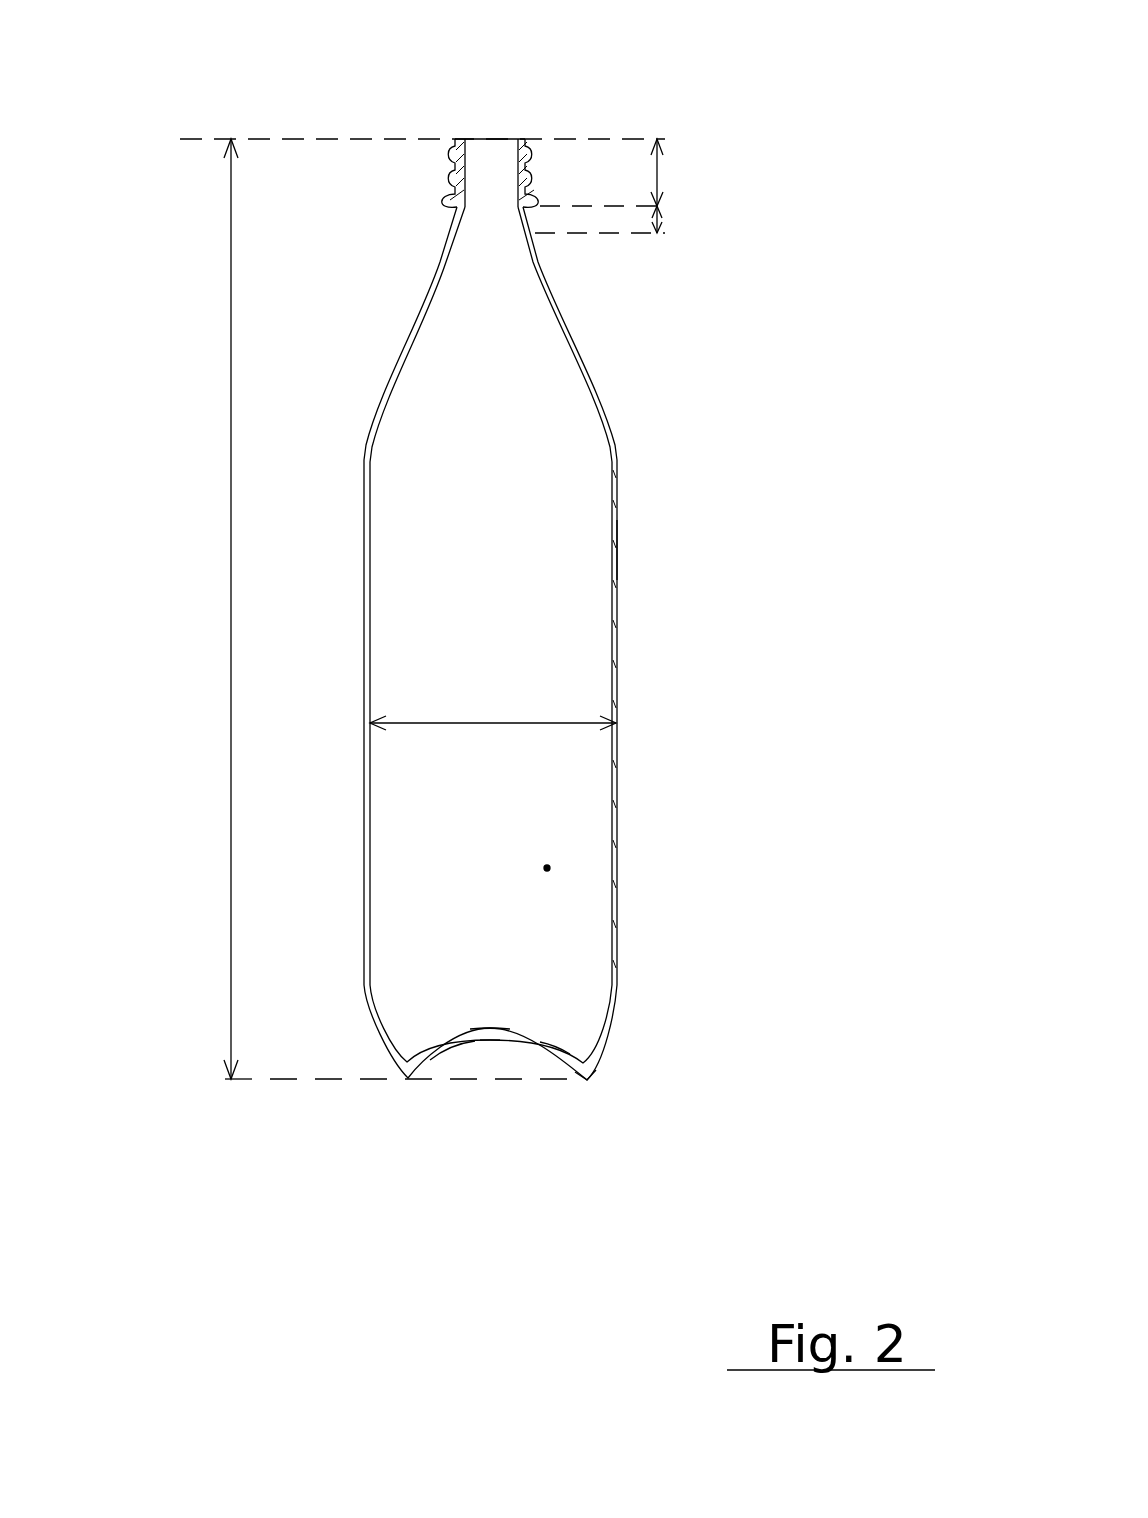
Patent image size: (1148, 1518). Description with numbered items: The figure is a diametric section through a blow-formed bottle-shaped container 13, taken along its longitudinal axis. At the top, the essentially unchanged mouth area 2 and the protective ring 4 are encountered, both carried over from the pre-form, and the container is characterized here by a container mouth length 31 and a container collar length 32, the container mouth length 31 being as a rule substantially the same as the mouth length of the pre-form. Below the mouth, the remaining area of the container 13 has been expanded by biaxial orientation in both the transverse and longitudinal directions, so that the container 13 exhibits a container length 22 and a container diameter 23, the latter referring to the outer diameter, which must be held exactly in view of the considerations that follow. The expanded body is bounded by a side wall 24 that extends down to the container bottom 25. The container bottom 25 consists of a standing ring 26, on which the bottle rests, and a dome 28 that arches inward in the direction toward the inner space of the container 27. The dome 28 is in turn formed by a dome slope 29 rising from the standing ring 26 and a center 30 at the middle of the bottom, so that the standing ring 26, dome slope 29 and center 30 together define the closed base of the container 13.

The mouth area 2 is at (497, 155).
The protective ring 4 is at (440, 195).
The bottle-shaped container 13 is at (622, 603).
The container length 22 is at (229, 623).
The container diameter 23 is at (548, 728).
The side wall 24 is at (623, 550).
The container bottom 25 is at (470, 1050).
The standing ring 26 is at (587, 1082).
The inner space of the container 27 is at (547, 868).
The dome 28 is at (495, 1040).
The dome slope 29 is at (555, 1040).
The center 30 is at (498, 1030).
The container mouth length 31 is at (658, 170).
The container collar length 32 is at (662, 215).